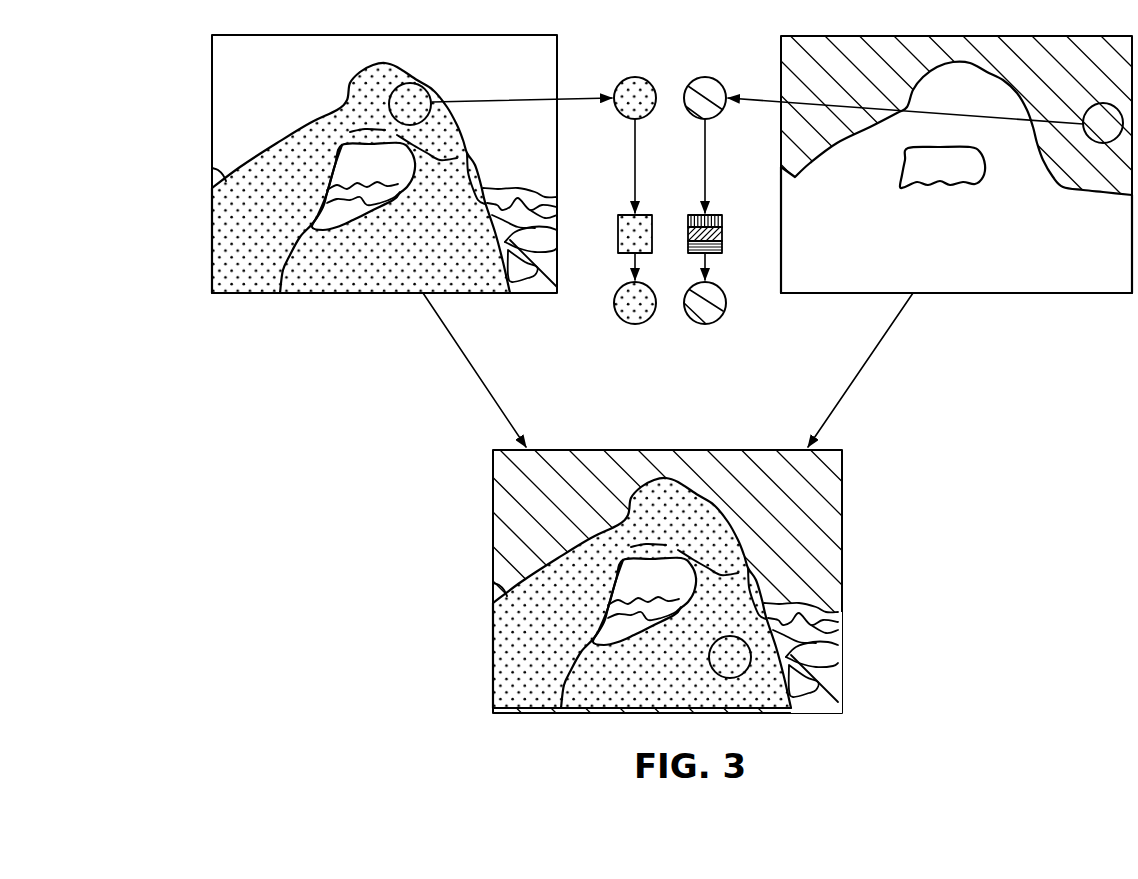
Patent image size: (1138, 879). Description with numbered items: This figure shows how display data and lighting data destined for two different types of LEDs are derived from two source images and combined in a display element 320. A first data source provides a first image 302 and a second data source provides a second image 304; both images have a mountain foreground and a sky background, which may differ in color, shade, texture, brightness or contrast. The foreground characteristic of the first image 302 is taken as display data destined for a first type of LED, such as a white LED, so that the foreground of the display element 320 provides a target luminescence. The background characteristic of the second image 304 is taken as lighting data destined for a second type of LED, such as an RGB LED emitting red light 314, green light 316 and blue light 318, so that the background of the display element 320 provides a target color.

The first image 302 is at (380, 35).
The second image 304 is at (956, 36).
The red light 314 is at (722, 220).
The green light 316 is at (688, 230).
The blue light 318 is at (722, 247).
The display element 320 is at (668, 450).